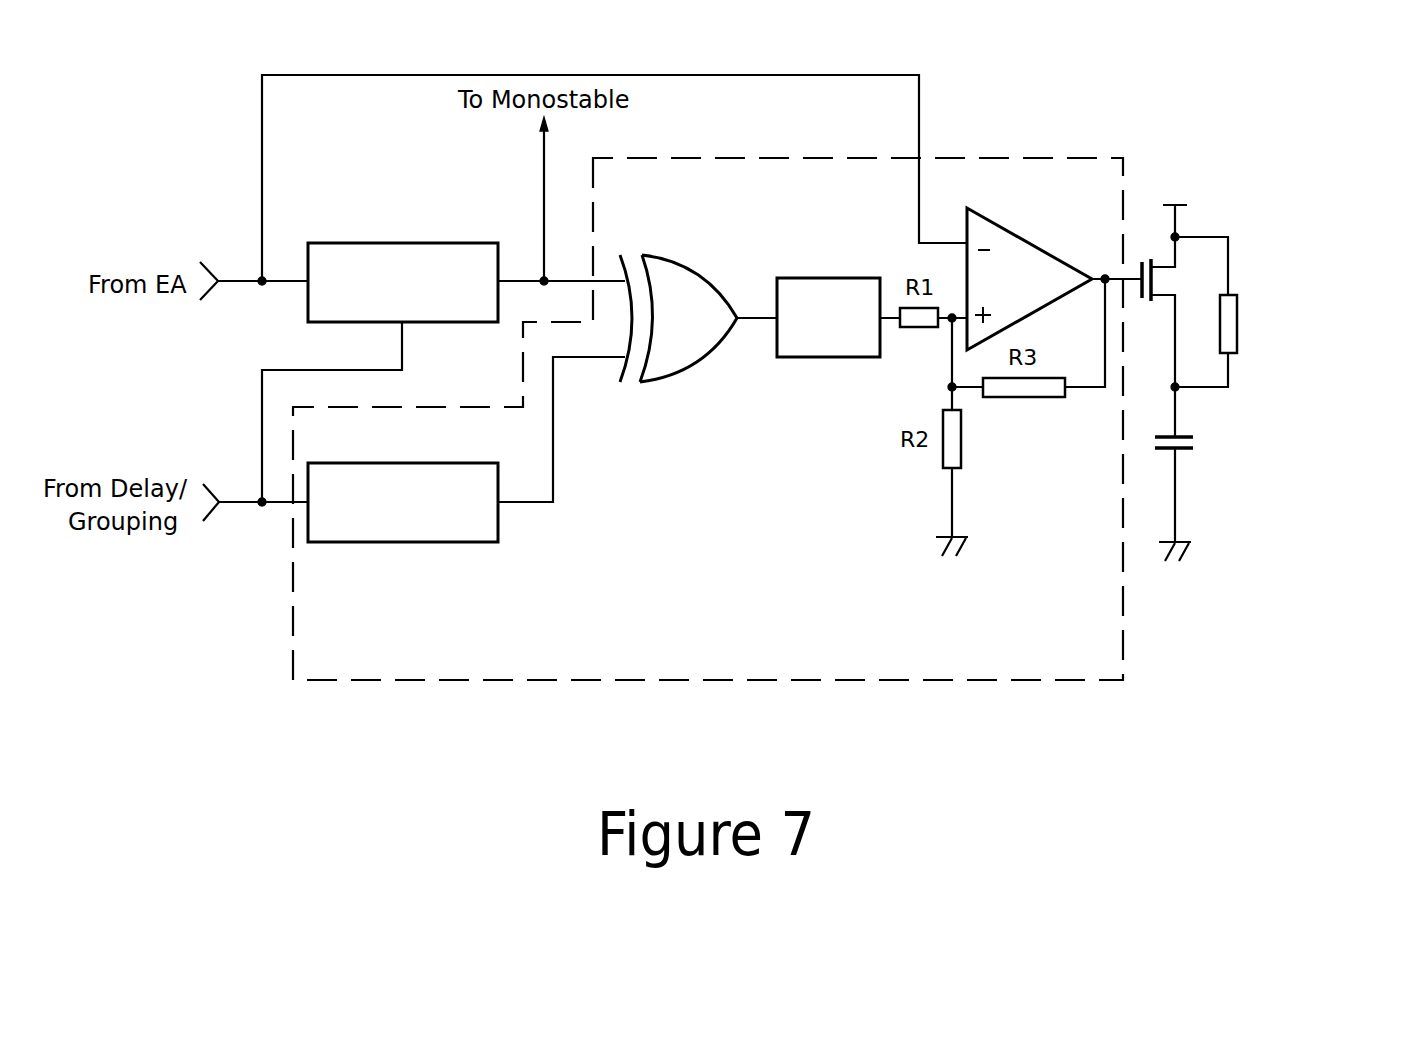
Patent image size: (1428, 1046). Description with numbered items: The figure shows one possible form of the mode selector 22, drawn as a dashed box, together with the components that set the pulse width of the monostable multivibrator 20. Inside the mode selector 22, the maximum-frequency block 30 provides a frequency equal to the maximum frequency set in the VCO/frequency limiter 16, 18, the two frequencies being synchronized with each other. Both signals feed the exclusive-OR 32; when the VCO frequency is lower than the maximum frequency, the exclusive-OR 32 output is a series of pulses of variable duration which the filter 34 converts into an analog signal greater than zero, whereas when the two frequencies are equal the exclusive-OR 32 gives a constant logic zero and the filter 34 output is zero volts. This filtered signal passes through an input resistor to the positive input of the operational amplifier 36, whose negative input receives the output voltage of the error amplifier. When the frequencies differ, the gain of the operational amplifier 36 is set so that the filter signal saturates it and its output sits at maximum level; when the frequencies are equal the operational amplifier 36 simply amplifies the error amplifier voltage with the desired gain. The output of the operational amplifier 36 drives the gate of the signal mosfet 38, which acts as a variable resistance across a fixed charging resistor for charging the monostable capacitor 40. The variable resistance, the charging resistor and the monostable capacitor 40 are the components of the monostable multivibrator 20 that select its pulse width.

The VCO 16 is at (403, 250).
The frequency limiter 18 is at (448, 243).
The monostable multivibrator 20 is at (1237, 313).
The mode selector 22 is at (990, 158).
The Fmax block 30 is at (465, 542).
The exclusive-OR 32 is at (678, 285).
The filter 34 is at (806, 290).
The operational amplifier 36 is at (1020, 255).
The signal mosfet 38 is at (1177, 281).
The capacitor Cmono 40 is at (1196, 442).